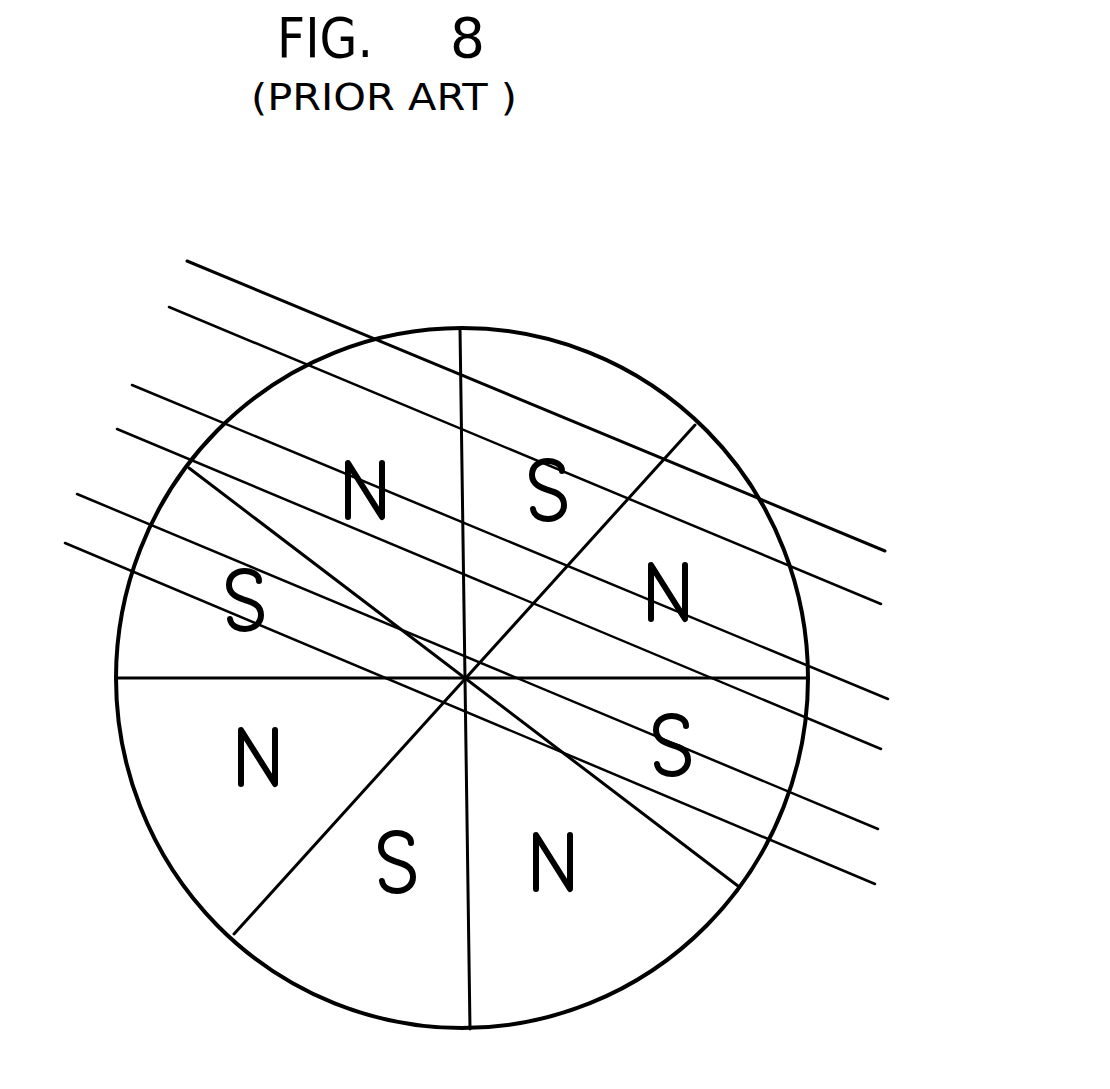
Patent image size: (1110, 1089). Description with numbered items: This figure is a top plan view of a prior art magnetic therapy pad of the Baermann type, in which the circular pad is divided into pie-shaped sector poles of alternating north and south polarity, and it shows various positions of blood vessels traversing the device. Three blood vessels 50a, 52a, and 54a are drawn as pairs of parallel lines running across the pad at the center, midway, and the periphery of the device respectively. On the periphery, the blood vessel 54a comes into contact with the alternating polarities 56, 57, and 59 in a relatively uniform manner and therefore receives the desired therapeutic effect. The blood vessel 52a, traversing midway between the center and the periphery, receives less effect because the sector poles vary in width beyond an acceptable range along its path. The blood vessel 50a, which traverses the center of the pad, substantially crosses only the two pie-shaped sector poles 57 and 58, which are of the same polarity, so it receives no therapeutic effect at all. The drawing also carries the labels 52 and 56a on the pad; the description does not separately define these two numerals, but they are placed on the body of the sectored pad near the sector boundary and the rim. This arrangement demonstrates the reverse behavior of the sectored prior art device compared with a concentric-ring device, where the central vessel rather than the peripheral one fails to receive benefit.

The blood vessel 50a is at (102, 535).
The rotor magnet 52 is at (183, 512).
The blood vessel 52a is at (155, 418).
The blood vessel 54a is at (220, 272).
The alternating polarity 56 is at (572, 368).
The pole boundary 56a is at (648, 666).
The pie-shaped sector pole 57 is at (773, 613).
The pie-shaped sector pole 58 is at (732, 858).
The alternating polarity 59 is at (410, 352).